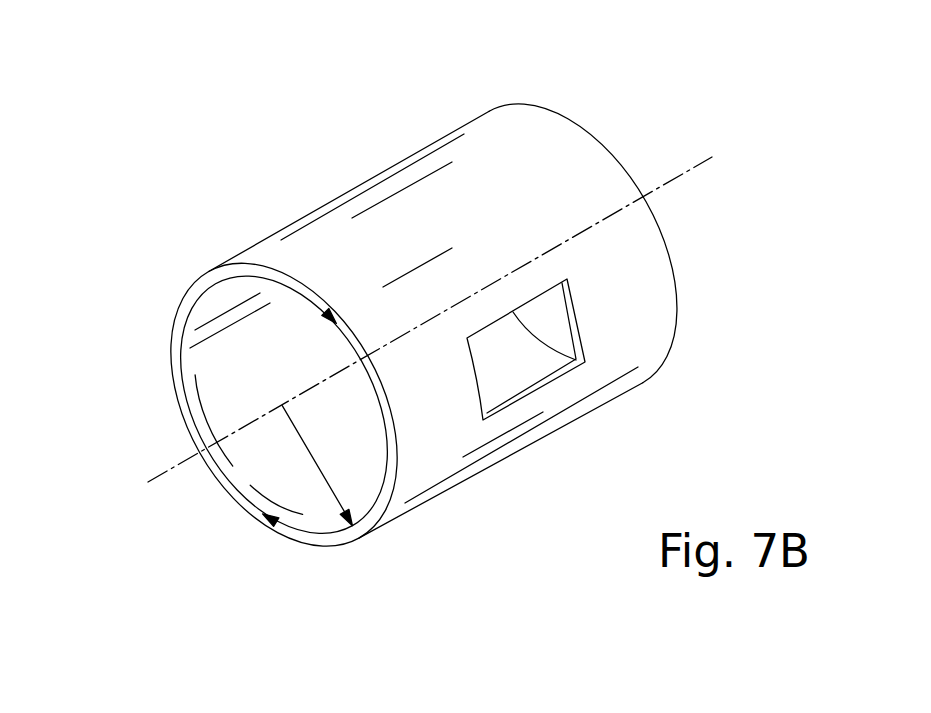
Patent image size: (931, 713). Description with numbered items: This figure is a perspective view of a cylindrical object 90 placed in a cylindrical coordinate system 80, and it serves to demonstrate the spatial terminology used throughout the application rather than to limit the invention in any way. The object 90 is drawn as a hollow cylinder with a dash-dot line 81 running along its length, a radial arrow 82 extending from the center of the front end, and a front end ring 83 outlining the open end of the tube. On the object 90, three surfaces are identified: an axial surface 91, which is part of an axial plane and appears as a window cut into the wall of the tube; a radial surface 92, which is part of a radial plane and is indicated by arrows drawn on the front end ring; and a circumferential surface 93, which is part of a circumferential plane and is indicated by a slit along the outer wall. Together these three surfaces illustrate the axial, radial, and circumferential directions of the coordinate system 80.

The cylindrical coordinate system 80 is at (598, 118).
The longitudinal axis 81 is at (160, 473).
The radial direction 82 is at (321, 473).
The end ring 83 is at (180, 302).
The cylindrical object 90 is at (460, 112).
The axial surface 91 is at (558, 377).
The radial surface 92 is at (298, 535).
The circumferential surface 93 is at (399, 213).